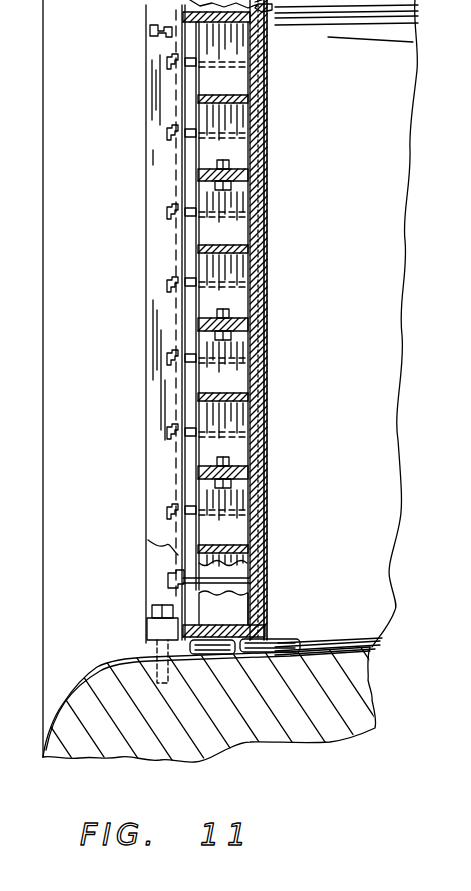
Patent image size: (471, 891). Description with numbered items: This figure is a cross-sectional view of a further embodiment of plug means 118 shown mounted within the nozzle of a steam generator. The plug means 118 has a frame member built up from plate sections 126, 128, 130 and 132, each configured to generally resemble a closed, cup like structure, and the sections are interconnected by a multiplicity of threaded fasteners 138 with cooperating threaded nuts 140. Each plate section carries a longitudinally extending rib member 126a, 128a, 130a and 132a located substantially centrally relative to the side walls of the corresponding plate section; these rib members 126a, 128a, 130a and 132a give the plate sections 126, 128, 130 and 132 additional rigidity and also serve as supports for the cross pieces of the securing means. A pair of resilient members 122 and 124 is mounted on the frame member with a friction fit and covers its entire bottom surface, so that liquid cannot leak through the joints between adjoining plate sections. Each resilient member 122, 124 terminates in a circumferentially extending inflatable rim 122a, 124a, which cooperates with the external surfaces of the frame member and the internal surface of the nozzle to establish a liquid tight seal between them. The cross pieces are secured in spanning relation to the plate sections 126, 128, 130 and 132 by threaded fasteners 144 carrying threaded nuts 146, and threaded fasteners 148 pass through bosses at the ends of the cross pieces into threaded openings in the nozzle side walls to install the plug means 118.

The plug means 118 is at (140, 372).
The resilient member 122 is at (264, 418).
The inflatable rim 122a is at (213, 655).
The resilient member 124 is at (268, 458).
The inflatable rim 124a is at (238, 652).
The plate section 126 is at (246, 50).
The rib member 126a is at (243, 97).
The plate section 128 is at (245, 200).
The rib member 128a is at (245, 247).
The plate section 130 is at (245, 345).
The rib member 130a is at (245, 394).
The plate section 132 is at (245, 496).
The rib member 132a is at (245, 542).
The threaded fastener 138 is at (218, 165).
The threaded nut 140 is at (215, 187).
The threaded fastener 144 is at (238, 578).
The threaded nut 146 is at (182, 579).
The threaded fastener 148 is at (328, 640).